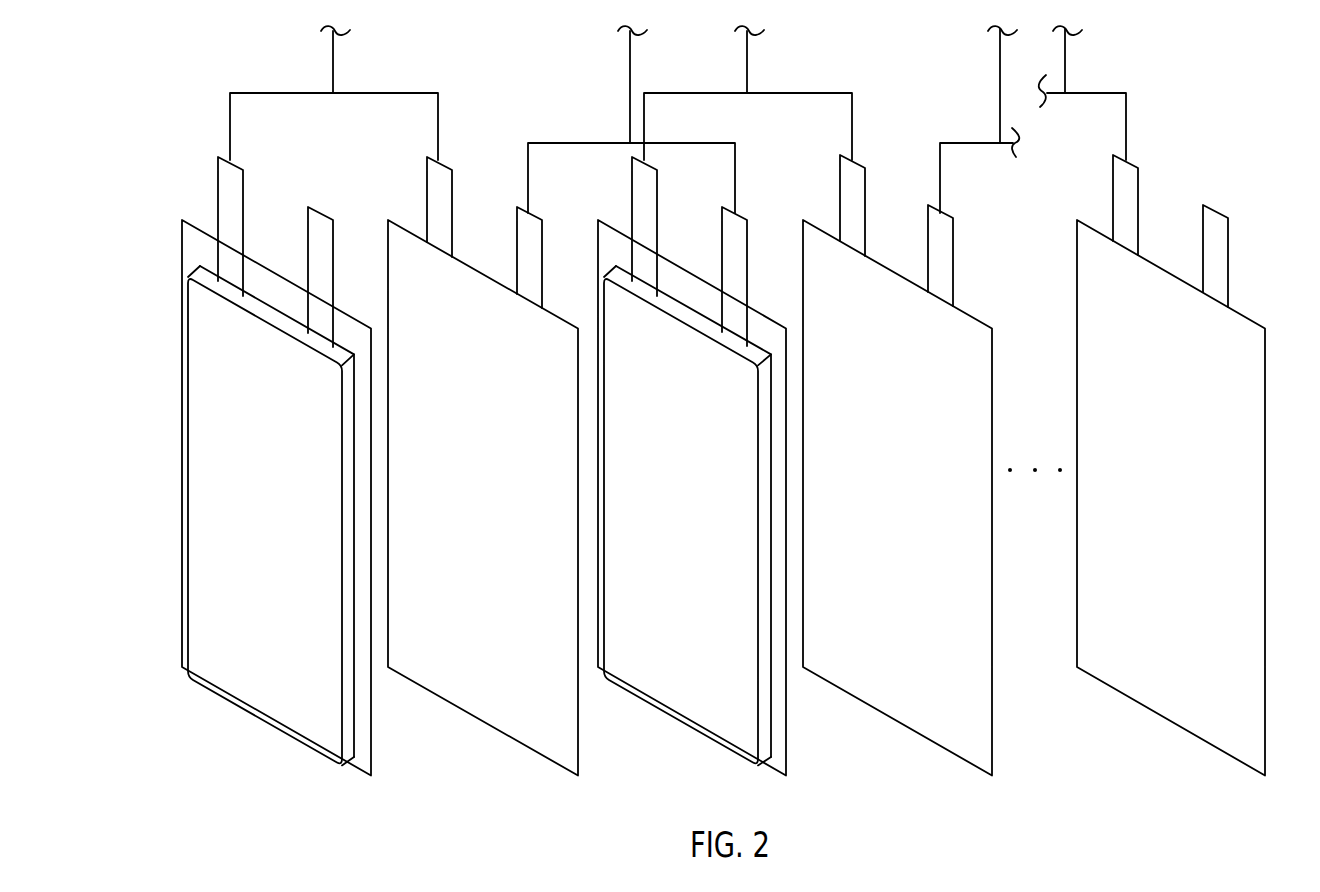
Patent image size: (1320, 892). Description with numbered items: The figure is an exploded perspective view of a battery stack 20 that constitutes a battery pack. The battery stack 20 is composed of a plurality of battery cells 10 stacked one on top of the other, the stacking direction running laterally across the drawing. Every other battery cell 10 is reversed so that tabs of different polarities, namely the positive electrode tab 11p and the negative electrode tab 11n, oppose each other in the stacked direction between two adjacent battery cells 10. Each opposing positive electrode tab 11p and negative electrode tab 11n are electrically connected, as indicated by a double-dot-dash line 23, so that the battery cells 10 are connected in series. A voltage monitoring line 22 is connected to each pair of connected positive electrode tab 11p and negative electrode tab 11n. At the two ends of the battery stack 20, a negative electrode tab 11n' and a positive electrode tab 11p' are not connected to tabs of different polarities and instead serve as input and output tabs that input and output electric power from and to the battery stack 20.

The battery stack 20 is at (172, 106).
The battery cell 10 is at (263, 722).
The positive electrode tab 11p is at (587, 231).
The negative electrode tab 11n is at (758, 249).
The negative electrode tab 11n' is at (347, 277).
The positive electrode tab 11p' is at (1243, 256).
The voltage monitoring line 22 is at (333, 52).
The double-dot-dash line 23 is at (410, 93).